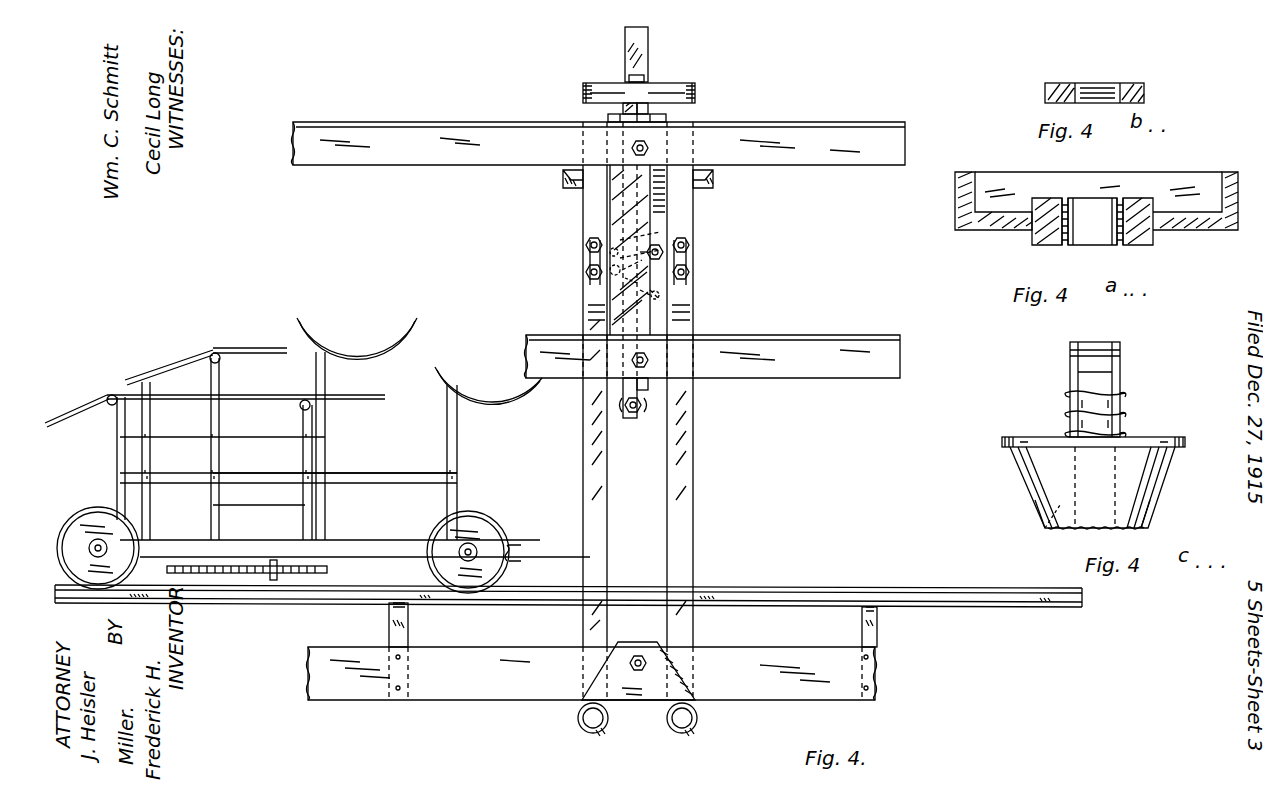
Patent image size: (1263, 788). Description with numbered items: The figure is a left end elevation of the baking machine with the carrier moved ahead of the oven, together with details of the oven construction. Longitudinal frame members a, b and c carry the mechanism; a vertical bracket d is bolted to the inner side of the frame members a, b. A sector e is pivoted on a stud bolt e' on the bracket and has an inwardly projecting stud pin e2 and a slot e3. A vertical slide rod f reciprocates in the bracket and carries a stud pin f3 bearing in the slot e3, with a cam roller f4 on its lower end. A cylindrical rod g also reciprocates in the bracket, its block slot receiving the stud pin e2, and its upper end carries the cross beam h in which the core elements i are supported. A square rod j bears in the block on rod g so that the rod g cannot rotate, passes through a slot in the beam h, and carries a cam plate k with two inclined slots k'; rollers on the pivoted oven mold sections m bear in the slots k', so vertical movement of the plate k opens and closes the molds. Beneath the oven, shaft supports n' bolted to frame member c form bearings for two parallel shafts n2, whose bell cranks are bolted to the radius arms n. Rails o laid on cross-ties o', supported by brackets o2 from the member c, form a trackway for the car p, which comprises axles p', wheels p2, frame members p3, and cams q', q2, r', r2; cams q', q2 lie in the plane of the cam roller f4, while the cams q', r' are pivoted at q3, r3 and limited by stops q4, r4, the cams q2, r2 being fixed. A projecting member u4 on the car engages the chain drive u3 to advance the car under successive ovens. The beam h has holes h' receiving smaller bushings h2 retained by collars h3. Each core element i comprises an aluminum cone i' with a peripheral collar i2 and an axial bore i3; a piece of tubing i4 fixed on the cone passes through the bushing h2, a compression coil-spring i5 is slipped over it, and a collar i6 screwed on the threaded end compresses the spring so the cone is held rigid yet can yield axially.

In FIG. 4, the longitudinal frame member a is at (832, 130).
In FIG. 4, the longitudinal frame member b is at (834, 350).
In FIG. 4, the longitudinal frame member c is at (750, 680).
In FIG. 4, the vertical bracket d is at (655, 320).
In FIG. 4, the sector e is at (582, 296).
In FIG. 4, the stud bolt e' is at (701, 243).
In FIG. 4, the stud pin e2 is at (660, 294).
In FIG. 4, the slot e3 is at (612, 272).
In FIG. 4, the vertical slide rod f is at (622, 106).
In FIG. 4, the stud pin f3 is at (610, 255).
In FIG. 4, the cam roller f4 is at (643, 408).
In FIG. 4, the cylindrical rod g is at (680, 110).
In FIG. 4, the cross beam h is at (668, 90).
In FIG. 4A, the cross beam h is at (1096, 222).
In FIG. 4A, the holes h' is at (1142, 228).
In FIG. 4A, the bushing h2 is at (1092, 221).
In FIG. 4A, the collar h3 is at (1148, 200).
In FIG. 4C, the core element i is at (1092, 466).
In FIG. 4C, the aluminum cone i' is at (1066, 508).
In FIG. 4C, the peripheral collar i2 is at (1002, 442).
In FIG. 4C, the axial bore i3 is at (1062, 522).
In FIG. 4C, the tubing i4 is at (1121, 370).
In FIG. 4C, the compression coil-spring i5 is at (1070, 395).
In FIG. 4B, the collar i6 is at (1058, 83).
In FIG. 4, the rod j is at (640, 35).
In FIG. 4, the cam plate k is at (547, 188).
In FIG. 4, the inclined slot k' is at (615, 182).
In FIG. 4, the oven mold section m is at (597, 205).
In FIG. 4, the radius arm n is at (648, 406).
In FIG. 4, the shaft support n' is at (638, 707).
In FIG. 4, the rotatable shaft n2 is at (682, 722).
In FIG. 4, the longitudinal rail o is at (568, 581).
In FIG. 4, the cross-tie o' is at (616, 625).
In FIG. 4, the bracket o2 is at (408, 624).
In FIG. 4, the car p is at (353, 454).
In FIG. 4, the axle p' is at (298, 532).
In FIG. 4, the wheel p2 is at (522, 560).
In FIG. 4, the frame member p3 is at (284, 440).
In FIG. 4, the cam q' is at (246, 344).
In FIG. 4, the cam q2 is at (477, 393).
In FIG. 4, the pivot q3 is at (303, 400).
In FIG. 4, the stop q4 is at (112, 405).
In FIG. 4, the cam r' is at (203, 318).
In FIG. 4, the cam r2 is at (355, 358).
In FIG. 4, the pivot r3 is at (217, 352).
In FIG. 4, the stop r4 is at (147, 380).
In FIG. 4, the chain drive u3 is at (218, 575).
In FIG. 4, the projecting member u4 is at (273, 582).